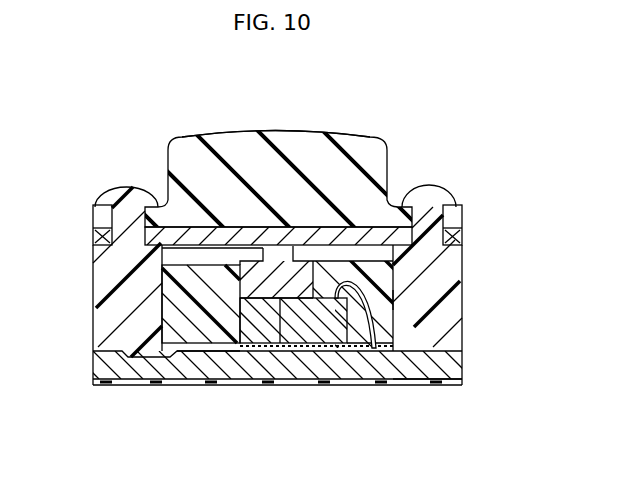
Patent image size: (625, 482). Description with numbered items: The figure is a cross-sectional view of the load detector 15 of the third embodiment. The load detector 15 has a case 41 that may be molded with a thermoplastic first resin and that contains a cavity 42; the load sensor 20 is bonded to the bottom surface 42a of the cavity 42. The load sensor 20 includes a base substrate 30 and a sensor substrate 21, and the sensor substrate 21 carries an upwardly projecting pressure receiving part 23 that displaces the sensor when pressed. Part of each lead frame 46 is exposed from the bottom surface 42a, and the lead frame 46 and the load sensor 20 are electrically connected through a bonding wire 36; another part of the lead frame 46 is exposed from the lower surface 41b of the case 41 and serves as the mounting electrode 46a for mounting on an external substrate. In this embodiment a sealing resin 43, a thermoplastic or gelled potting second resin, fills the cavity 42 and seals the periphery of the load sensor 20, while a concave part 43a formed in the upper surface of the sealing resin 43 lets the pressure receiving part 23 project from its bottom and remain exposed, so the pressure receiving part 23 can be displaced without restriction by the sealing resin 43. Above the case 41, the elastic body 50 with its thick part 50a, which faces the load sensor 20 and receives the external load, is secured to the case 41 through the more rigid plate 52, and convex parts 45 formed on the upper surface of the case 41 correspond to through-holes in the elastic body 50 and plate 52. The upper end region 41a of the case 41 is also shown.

The load detector 15 is at (166, 88).
The load sensor 20 is at (220, 420).
The sensor substrate 21 is at (284, 300).
The pressure receiving part 23 is at (252, 332).
The base substrate 30 is at (326, 330).
The bonding wire 36 is at (378, 300).
The case 41 is at (107, 278).
The upper end of housing 41a is at (106, 239).
The lower surface of the case 41b is at (392, 362).
The cavity 42 is at (168, 308).
The bottom surface of the cavity 42a is at (198, 350).
The sealing resin 43 is at (180, 295).
The concave part 43a is at (392, 255).
The convex parts 45 is at (118, 197).
The lead frame 46 is at (115, 366).
The mounting electrode 46a is at (143, 386).
The elastic body 50 is at (297, 135).
The thick part 50a is at (276, 134).
The plate 52 is at (187, 237).